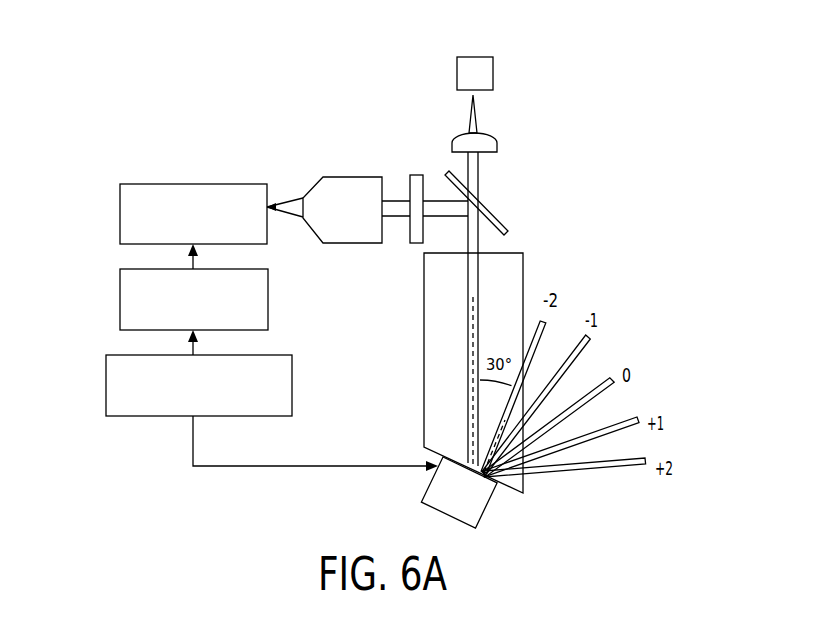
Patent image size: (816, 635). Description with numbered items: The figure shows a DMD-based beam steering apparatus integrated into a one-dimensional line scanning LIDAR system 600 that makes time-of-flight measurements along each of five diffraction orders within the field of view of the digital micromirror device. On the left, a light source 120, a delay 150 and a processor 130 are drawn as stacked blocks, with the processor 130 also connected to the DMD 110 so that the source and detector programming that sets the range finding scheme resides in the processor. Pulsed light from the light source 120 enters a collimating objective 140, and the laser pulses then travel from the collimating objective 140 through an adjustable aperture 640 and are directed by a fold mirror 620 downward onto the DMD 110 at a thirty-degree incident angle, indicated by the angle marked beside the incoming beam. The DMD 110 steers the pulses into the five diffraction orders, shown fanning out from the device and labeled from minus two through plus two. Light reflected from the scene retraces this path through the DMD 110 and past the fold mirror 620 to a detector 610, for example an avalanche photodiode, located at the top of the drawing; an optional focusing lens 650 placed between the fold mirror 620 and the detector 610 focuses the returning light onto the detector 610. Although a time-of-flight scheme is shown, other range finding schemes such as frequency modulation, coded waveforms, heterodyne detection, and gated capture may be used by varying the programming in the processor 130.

The line scanning LIDAR system 600 is at (258, 80).
The detector 610 is at (493, 62).
The fold mirror 620 is at (489, 211).
The adjustable aperture 640 is at (414, 174).
The focusing lens 650 is at (497, 140).
The light source 120 is at (120, 222).
The delay 150 is at (120, 290).
The processor 130 is at (106, 372).
The collimating objective 140 is at (361, 245).
The digital micromirror device (DMD) 110 is at (493, 515).